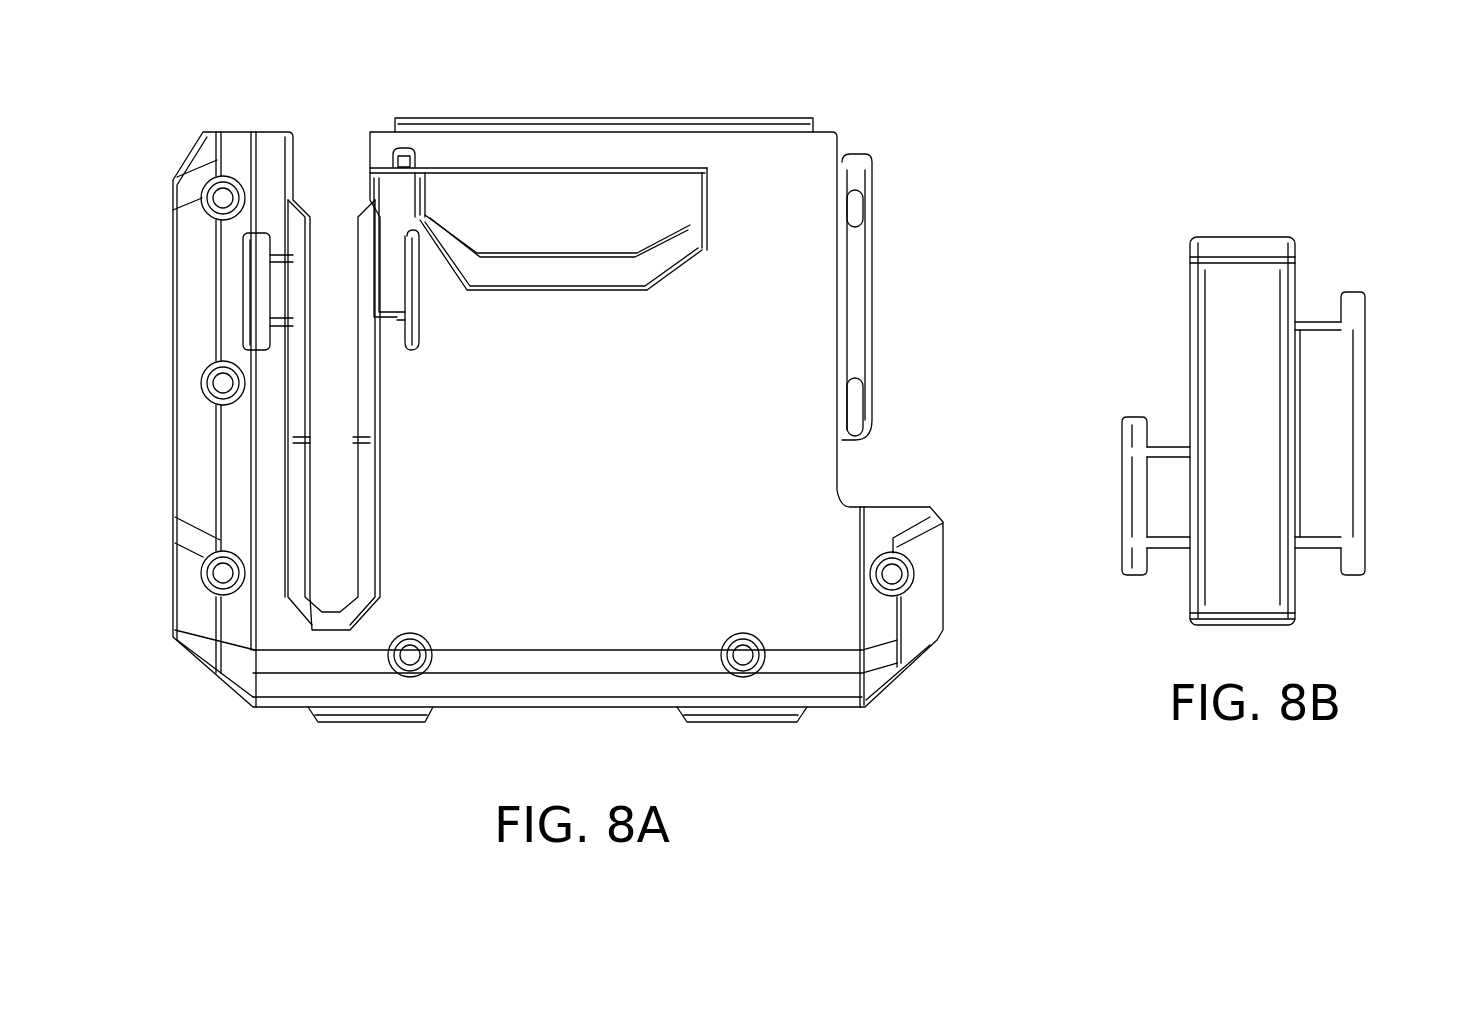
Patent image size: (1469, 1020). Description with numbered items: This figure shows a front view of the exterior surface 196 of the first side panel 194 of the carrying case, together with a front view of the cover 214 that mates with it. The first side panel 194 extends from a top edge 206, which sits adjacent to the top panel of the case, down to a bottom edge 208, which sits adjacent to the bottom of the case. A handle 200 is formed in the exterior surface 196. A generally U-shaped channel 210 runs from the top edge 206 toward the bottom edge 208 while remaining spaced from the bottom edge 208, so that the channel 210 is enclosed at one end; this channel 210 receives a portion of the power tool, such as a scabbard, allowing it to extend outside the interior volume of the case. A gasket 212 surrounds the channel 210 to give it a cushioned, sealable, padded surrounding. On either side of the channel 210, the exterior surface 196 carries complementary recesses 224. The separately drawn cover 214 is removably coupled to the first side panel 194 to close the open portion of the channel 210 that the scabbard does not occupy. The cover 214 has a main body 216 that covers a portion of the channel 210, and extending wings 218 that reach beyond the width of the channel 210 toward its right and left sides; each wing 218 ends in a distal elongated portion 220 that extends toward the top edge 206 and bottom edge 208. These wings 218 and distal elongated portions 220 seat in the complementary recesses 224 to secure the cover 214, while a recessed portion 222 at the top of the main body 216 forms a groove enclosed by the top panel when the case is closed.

In FIG. 8A, the first side panel 194 is at (895, 110).
In FIG. 8A, the exterior surface 196 is at (560, 464).
In FIG. 8A, the handle 200 is at (570, 205).
In FIG. 8A, the top edge 206 is at (387, 130).
In FIG. 8A, the bottom edge 208 is at (582, 712).
In FIG. 8A, the channel 210 is at (332, 230).
In FIG. 8B, the channel 210 is at (1128, 438).
In FIG. 8A, the gasket 212 is at (313, 362).
In FIG. 8B, the cover 214 is at (1333, 210).
In FIG. 8B, the main body 216 is at (1265, 357).
In FIG. 8B, the extending wings 218 is at (1167, 462).
In FIG. 8B, the distal elongated portion 220 is at (1358, 321).
In FIG. 8B, the recessed portion 222 is at (1243, 233).
In FIG. 8A, the complementary recesses 224 is at (268, 282).